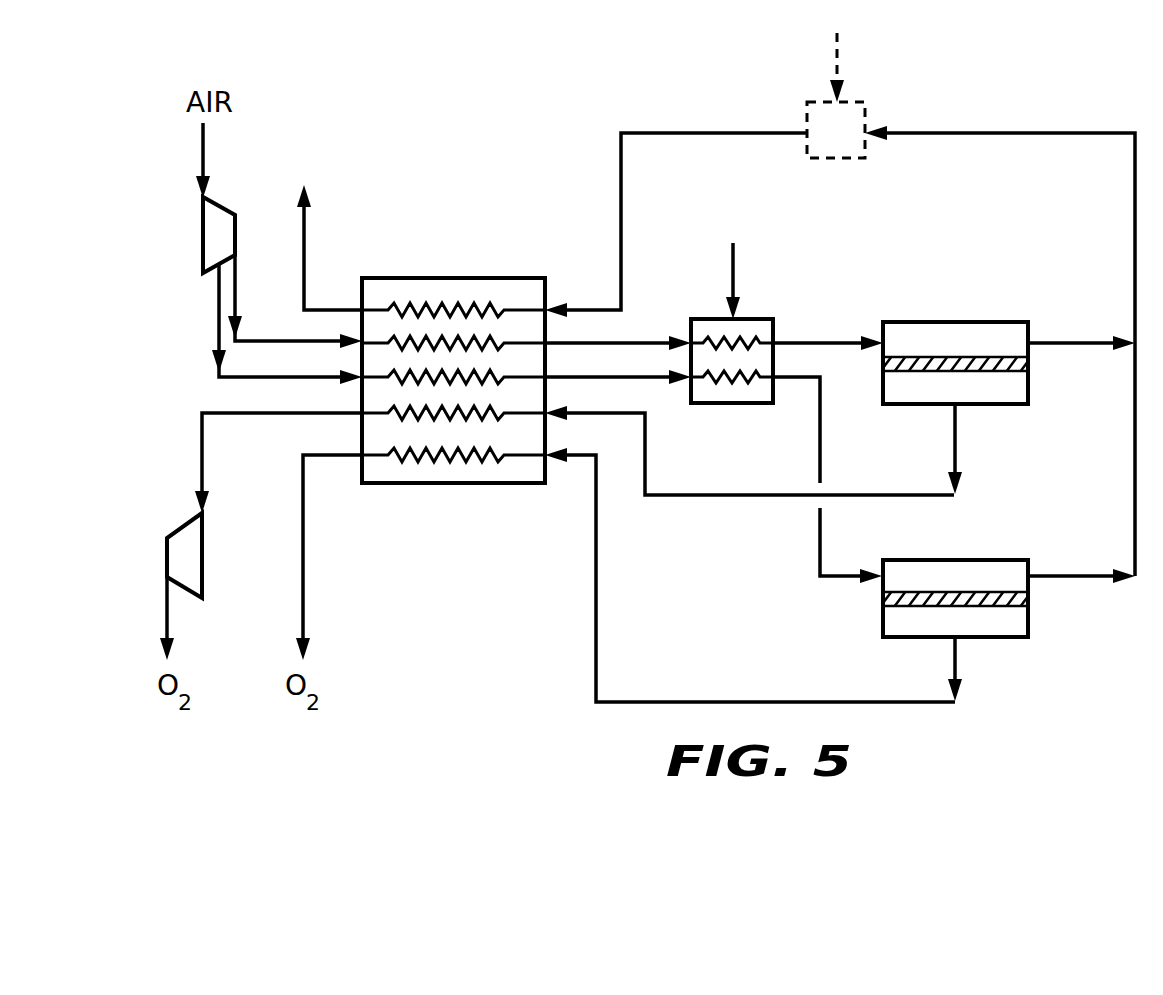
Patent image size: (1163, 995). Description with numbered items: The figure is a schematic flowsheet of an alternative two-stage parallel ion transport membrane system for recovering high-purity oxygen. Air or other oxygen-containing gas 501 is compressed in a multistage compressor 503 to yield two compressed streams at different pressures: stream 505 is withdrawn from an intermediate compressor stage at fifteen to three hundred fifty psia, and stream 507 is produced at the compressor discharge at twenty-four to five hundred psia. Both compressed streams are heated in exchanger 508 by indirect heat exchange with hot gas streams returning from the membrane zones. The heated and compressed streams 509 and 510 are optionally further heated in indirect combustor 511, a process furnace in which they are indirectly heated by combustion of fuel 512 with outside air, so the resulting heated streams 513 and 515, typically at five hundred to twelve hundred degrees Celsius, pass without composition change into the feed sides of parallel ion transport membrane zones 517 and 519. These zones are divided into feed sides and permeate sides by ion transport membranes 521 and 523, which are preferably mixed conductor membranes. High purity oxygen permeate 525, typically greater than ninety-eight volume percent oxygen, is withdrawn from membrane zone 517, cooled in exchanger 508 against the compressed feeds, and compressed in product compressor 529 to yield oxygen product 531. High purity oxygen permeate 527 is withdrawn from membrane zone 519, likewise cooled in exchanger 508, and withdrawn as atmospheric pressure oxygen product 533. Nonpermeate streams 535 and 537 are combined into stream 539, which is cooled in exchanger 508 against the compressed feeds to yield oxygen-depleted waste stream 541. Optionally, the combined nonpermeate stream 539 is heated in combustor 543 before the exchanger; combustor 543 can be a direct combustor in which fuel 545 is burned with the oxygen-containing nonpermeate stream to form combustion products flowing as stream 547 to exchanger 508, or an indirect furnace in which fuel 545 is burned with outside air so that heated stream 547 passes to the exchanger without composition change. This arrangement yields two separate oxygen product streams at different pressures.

The oxygen-containing gas 501 is at (203, 152).
The multistage compressor 503 is at (203, 222).
The compressed stream 505 is at (218, 343).
The compressed stream 507 is at (235, 282).
The exchanger 508 is at (445, 278).
The heated and compressed stream 509 is at (643, 378).
The heated and compressed stream 510 is at (650, 344).
The indirect combustor 511 is at (757, 403).
The fuel 512 is at (733, 273).
The heated stream 513 is at (827, 344).
The heated stream 515 is at (821, 456).
The ion transport membrane zone 517 is at (958, 321).
The ion transport membrane zone 519 is at (983, 560).
The ion transport membrane 521 is at (990, 372).
The ion transport membrane 523 is at (987, 607).
The high purity oxygen permeate 525 is at (738, 495).
The high purity oxygen permeate 527 is at (768, 702).
The product compressor 529 is at (202, 553).
The oxygen product 531 is at (168, 623).
The atmospheric pressure oxygen product 533 is at (303, 568).
The nonpermeate stream 535 is at (1067, 345).
The nonpermeate stream 537 is at (1067, 575).
The combined nonpermeate stream 539 is at (950, 132).
The oxygen-depleted waste stream 541 is at (304, 240).
The combustor 543 is at (865, 158).
The fuel 545 is at (836, 68).
The heated stream 547 is at (621, 189).